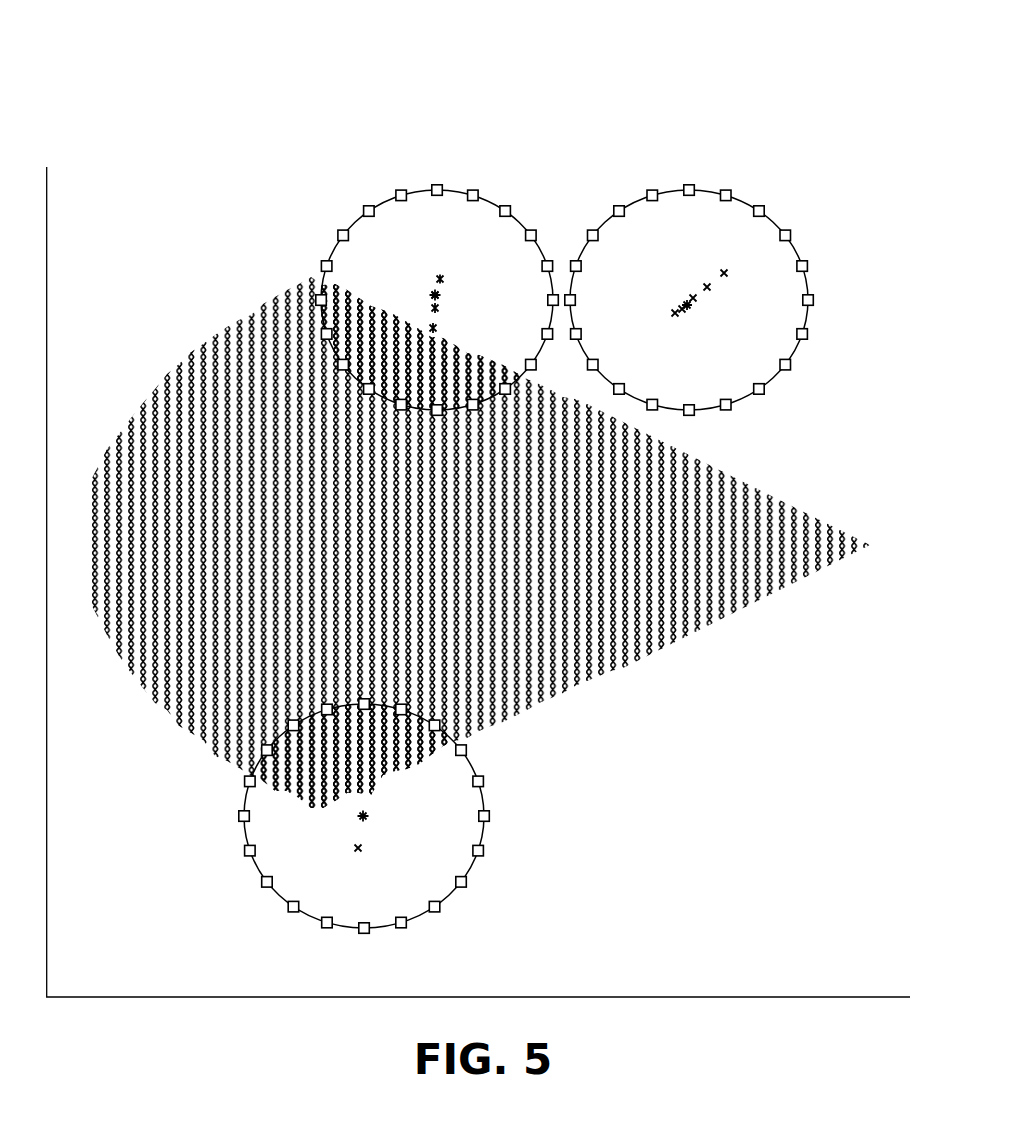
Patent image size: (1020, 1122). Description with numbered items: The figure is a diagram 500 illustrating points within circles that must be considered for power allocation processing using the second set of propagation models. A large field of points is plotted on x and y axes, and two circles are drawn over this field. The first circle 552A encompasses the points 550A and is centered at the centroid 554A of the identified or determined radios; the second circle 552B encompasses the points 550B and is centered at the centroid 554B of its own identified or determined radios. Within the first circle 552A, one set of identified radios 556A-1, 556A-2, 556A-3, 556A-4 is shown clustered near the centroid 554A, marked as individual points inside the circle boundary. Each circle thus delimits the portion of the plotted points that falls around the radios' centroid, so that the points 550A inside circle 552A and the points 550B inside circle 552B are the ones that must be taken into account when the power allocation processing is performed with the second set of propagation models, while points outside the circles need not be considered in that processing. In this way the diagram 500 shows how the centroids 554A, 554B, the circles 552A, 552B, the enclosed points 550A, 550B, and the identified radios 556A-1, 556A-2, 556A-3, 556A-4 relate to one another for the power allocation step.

The diagram illustrating points within circles 500 is at (468, 66).
The points 550A is at (360, 308).
The circle 552A is at (380, 204).
The centroid 554A is at (431, 297).
The identified radio 556A-1 is at (443, 310).
The identified radio 556A-2 is at (443, 294).
The identified radio 556A-3 is at (446, 280).
The identified radio 556A-4 is at (440, 324).
The points 550B is at (298, 792).
The circle 552B is at (491, 830).
The centroid 554B is at (368, 814).